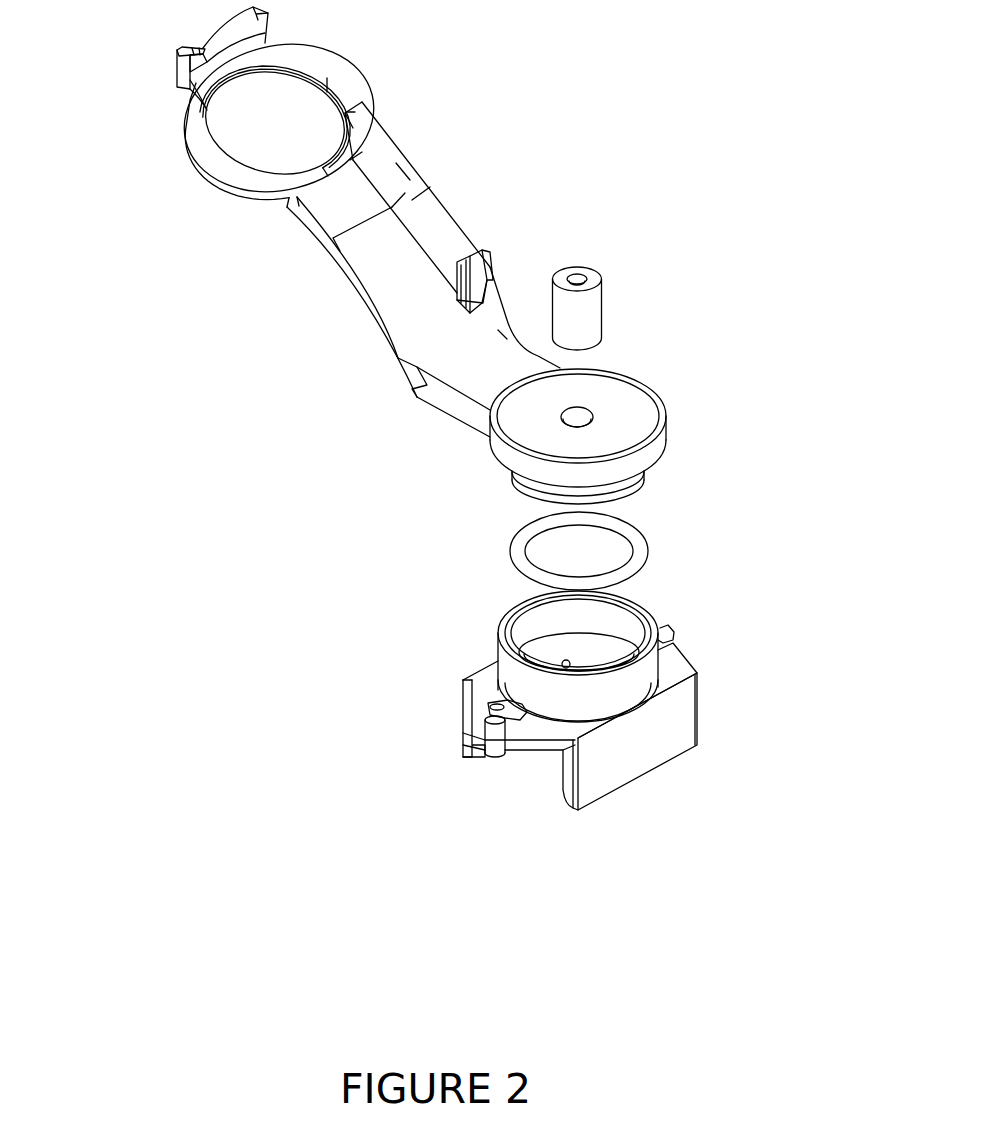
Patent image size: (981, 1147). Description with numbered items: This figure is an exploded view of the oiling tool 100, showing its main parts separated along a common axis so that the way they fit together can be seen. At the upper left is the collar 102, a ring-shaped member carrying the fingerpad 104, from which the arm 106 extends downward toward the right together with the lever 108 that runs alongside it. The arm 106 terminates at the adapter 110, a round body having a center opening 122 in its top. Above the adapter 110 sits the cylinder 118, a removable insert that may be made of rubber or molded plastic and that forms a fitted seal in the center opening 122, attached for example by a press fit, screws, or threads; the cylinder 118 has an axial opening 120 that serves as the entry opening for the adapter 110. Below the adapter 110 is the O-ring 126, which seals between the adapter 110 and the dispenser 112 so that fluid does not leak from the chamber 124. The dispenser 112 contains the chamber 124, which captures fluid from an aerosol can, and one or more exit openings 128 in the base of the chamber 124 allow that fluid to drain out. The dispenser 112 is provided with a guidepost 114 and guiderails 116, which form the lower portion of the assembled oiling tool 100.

The oiling tool 100 is at (592, 53).
The collar 102 is at (195, 183).
The fingerpad 104 is at (152, 62).
The arm 106 is at (325, 293).
The lever 108 is at (475, 212).
The adapter 110 is at (635, 426).
The dispenser 112 is at (569, 736).
The guidepost 114 is at (498, 767).
The guiderails 116 is at (455, 743).
The cylinder 118 is at (638, 287).
The axial opening 120 is at (583, 272).
The center opening 122 is at (588, 410).
The chamber 124 is at (550, 645).
The O-ring 126 is at (665, 547).
The exit openings 128 is at (557, 662).